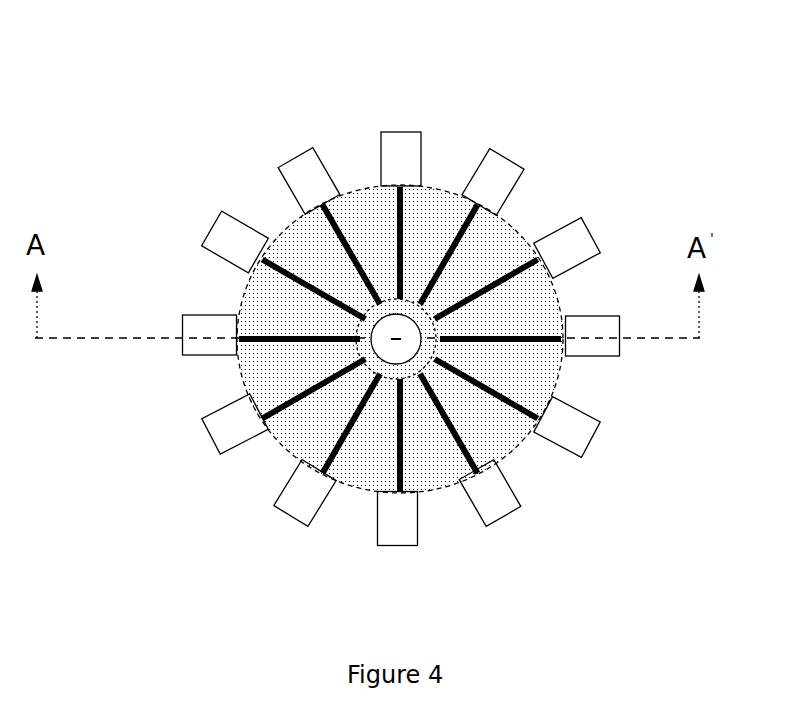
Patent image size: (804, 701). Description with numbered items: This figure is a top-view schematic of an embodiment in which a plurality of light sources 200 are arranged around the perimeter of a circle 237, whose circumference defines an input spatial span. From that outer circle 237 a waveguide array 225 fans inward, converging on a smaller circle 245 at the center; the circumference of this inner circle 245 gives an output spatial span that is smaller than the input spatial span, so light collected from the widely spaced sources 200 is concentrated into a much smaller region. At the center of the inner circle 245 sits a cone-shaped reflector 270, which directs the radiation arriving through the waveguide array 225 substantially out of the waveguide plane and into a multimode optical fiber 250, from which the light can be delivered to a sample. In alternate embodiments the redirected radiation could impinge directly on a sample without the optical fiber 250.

The light sources 200 is at (317, 183).
The waveguide array 225 is at (373, 365).
The circle 237 is at (358, 494).
The circle 245 is at (418, 325).
The multimode optical fiber 250 is at (410, 302).
The cone-shaped reflector 270 is at (396, 343).